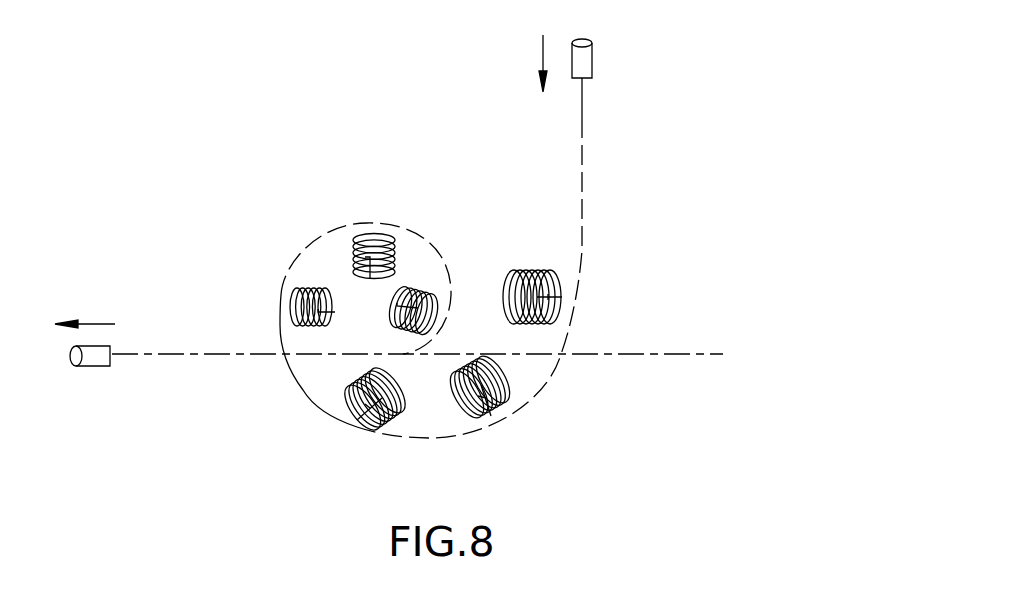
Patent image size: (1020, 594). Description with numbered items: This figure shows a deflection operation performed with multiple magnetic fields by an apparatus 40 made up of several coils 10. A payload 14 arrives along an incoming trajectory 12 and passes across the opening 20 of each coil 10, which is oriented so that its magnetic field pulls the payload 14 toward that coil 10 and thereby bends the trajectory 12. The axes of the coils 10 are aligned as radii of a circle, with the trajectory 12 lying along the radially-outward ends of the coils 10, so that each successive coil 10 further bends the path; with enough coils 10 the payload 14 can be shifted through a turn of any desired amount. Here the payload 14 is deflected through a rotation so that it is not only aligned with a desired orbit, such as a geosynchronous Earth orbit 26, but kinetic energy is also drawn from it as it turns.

The coil 10 is at (353, 253).
The trajectory 12 is at (583, 173).
The payload 14 is at (587, 63).
The opening 20 is at (537, 297).
The geosynchronous Earth orbit 26 is at (598, 353).
The apparatus 40 is at (184, 175).